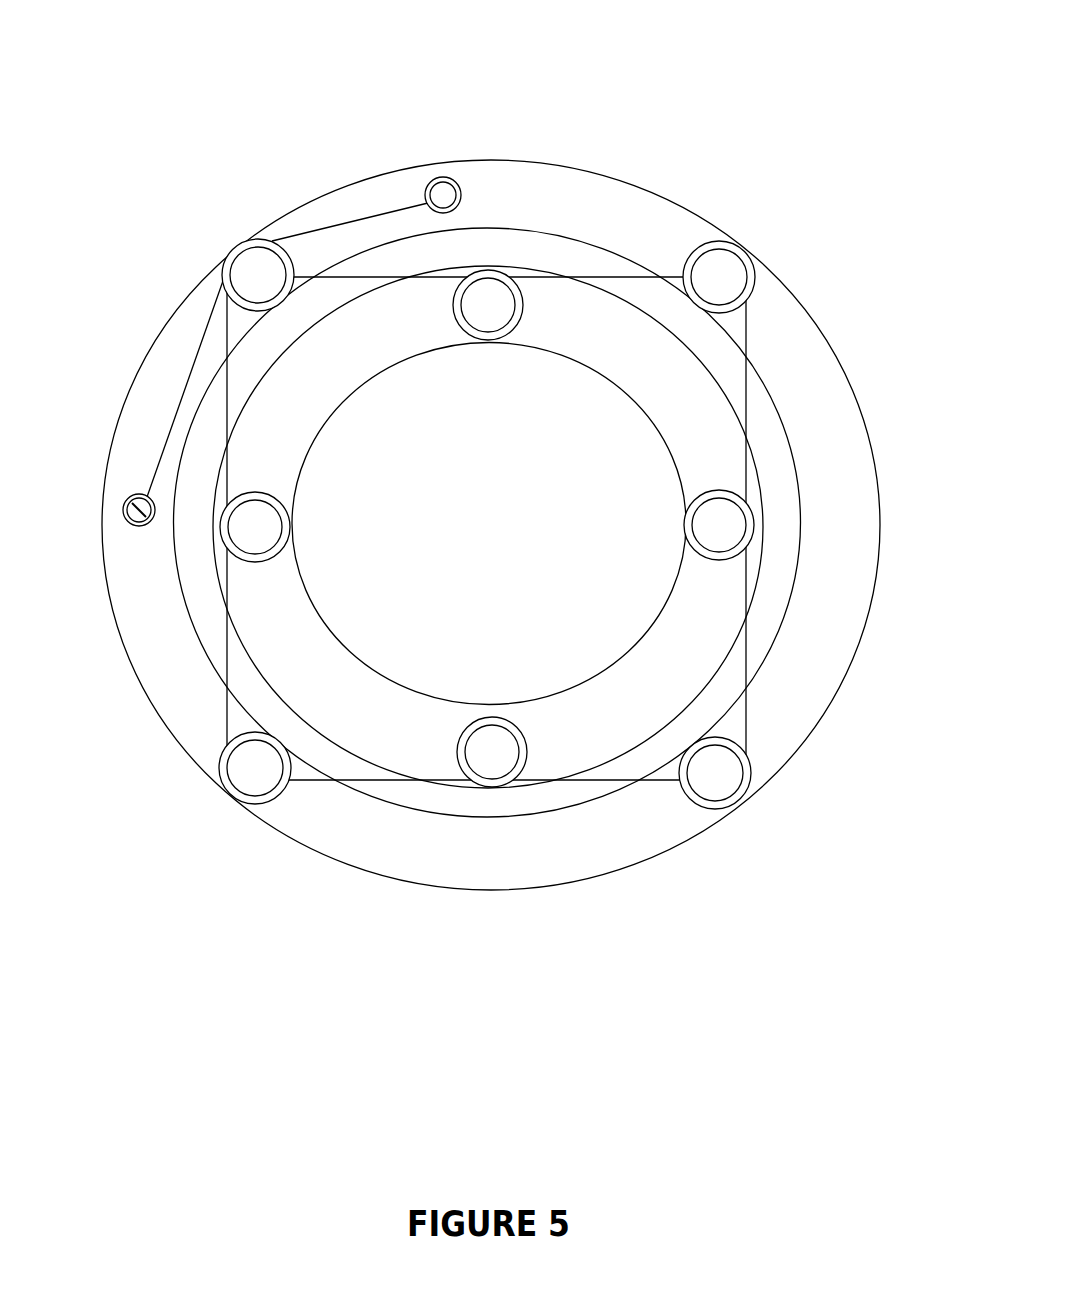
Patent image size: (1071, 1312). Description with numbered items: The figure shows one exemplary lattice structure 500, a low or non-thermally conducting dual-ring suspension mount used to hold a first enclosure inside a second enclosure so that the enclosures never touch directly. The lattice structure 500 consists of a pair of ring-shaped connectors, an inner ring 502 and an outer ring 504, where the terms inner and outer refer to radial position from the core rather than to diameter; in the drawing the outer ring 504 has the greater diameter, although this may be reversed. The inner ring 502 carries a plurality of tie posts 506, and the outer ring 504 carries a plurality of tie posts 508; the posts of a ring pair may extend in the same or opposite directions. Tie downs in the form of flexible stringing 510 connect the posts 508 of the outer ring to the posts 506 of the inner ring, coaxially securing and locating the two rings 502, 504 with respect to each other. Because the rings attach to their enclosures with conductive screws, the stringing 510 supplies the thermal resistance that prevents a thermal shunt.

The lattice structure 500 is at (790, 85).
The inner ring 502 is at (373, 380).
The outer ring 504 is at (630, 184).
The tie posts 506 is at (291, 527).
The tie posts 508 is at (444, 177).
The flexible stringing 510 is at (170, 397).